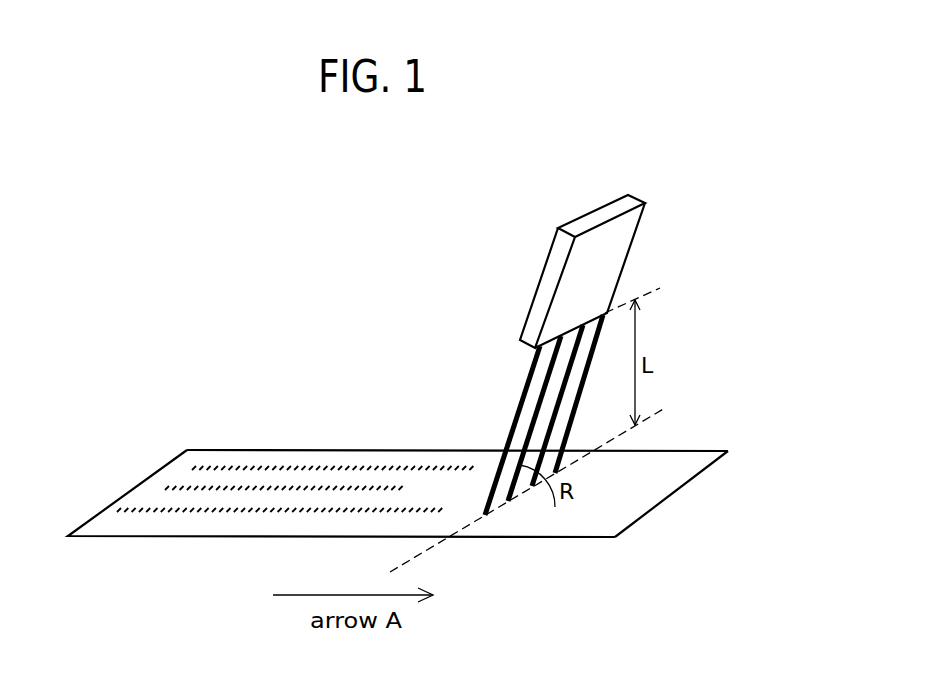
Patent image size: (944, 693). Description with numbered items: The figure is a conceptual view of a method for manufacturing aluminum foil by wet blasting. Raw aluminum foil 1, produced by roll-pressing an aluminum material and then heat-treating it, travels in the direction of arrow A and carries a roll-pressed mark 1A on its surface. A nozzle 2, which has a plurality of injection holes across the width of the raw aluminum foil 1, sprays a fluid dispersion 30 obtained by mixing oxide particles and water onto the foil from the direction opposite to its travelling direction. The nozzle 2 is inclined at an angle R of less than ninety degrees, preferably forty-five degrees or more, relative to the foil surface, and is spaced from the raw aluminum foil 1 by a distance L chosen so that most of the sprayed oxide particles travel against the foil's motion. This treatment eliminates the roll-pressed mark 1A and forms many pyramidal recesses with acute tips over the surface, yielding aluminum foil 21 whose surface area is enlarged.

The raw aluminum foil 1 is at (260, 449).
The roll-pressed mark 1A is at (217, 508).
The nozzle 2 is at (583, 222).
The aluminum foil 21 is at (710, 457).
The fluid dispersion 30 is at (510, 420).